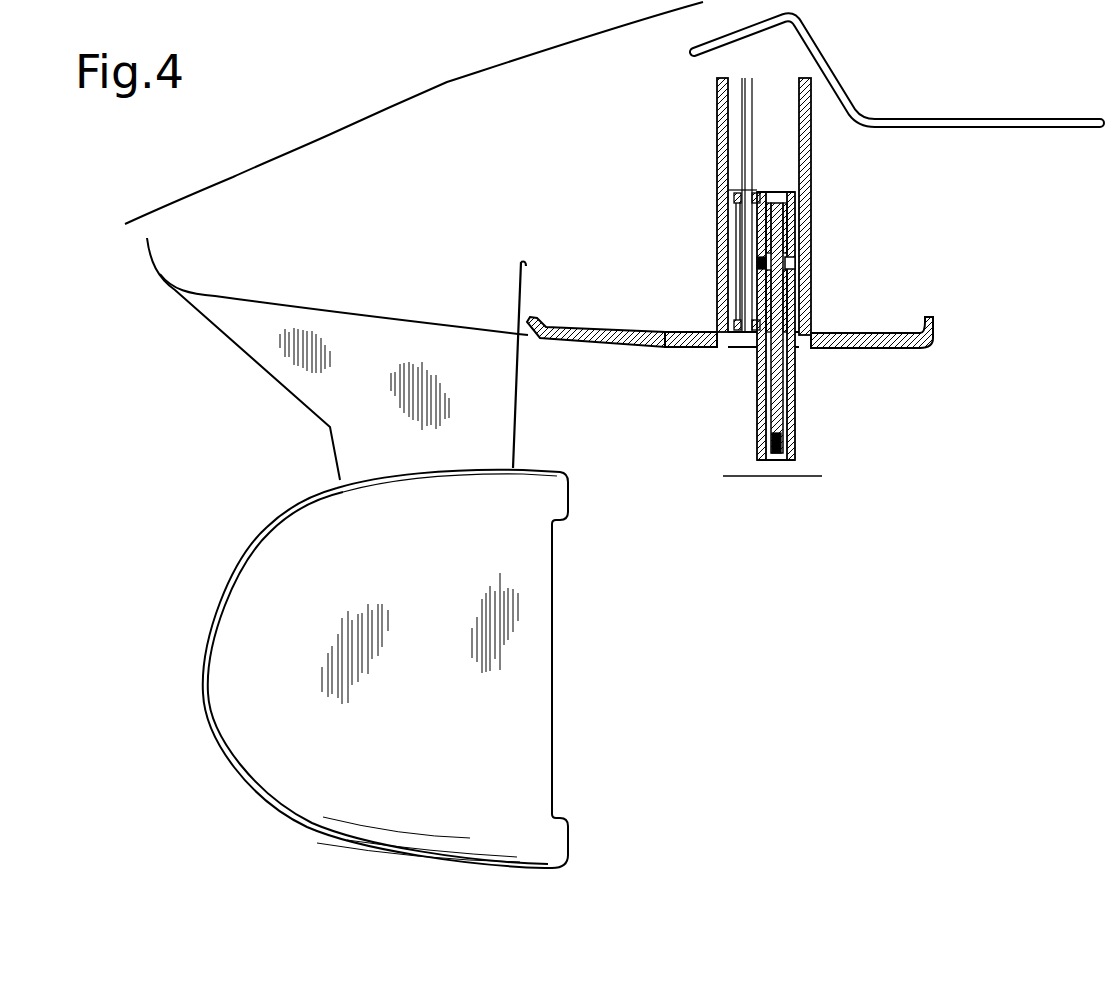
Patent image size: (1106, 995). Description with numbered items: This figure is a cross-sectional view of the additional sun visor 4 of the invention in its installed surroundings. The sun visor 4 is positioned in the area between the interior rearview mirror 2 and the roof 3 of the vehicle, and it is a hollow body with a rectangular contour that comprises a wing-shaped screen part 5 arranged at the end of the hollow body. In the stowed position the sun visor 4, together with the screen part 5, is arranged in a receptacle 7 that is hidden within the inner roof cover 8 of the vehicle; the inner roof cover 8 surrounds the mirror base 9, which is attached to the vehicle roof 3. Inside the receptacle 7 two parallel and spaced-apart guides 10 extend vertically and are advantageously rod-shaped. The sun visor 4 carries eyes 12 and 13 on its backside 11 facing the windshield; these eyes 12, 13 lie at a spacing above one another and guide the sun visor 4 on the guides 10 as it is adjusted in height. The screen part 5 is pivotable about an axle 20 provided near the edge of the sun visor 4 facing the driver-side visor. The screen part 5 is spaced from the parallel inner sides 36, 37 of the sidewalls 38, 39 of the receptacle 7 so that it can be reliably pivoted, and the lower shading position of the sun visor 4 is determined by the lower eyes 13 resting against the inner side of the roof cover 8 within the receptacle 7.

The interior rearview mirror 2 is at (530, 662).
The roof 3 is at (970, 123).
The sun visor 4 is at (795, 408).
The screen part 5 is at (773, 443).
The receptacle 7 is at (812, 185).
The inner roof cover 8 is at (590, 328).
The mirror base 9 is at (273, 350).
The guides 10 is at (748, 110).
The backside 11 is at (799, 357).
The eye 12 is at (730, 190).
The lower eye 13 is at (732, 325).
The axle 20 is at (797, 258).
The inner side 36 is at (772, 290).
The inner side 37 is at (800, 302).
The sidewall 38 is at (727, 208).
The sidewall 39 is at (800, 218).